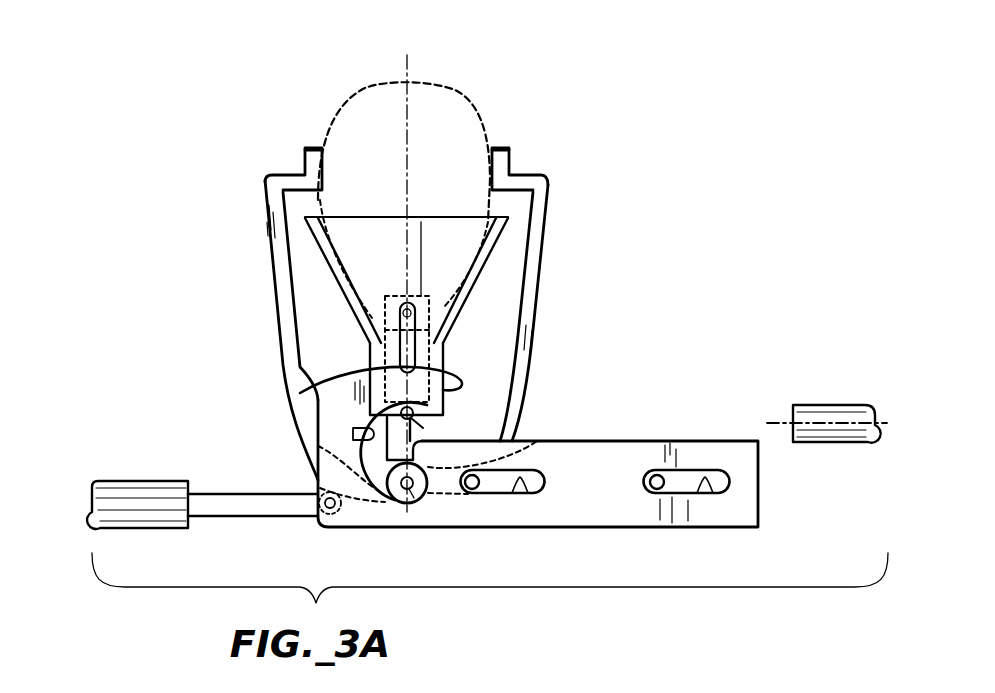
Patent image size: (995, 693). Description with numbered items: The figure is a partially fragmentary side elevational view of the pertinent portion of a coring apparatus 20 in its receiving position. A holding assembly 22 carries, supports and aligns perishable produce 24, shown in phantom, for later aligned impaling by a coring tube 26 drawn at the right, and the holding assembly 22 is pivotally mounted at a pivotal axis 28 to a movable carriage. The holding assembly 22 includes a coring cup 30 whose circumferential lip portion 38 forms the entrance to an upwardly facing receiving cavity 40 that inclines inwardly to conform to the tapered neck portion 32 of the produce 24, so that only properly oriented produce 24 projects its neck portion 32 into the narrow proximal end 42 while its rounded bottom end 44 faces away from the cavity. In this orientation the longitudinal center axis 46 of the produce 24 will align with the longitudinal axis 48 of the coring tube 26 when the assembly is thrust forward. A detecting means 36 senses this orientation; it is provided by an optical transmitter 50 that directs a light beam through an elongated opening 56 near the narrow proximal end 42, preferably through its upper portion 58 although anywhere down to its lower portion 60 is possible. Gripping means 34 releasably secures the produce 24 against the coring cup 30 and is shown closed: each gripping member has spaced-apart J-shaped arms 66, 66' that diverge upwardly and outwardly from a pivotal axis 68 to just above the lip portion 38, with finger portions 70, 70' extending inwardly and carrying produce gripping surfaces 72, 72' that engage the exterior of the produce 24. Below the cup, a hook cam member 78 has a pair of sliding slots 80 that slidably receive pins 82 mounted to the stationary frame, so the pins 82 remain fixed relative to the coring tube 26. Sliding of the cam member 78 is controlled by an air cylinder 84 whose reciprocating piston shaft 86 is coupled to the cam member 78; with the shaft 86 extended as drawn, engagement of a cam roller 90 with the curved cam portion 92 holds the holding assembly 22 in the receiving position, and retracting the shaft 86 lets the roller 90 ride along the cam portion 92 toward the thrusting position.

The coring apparatus 20 is at (167, 107).
The holding assembly 22 is at (341, 355).
The perishable produce 24 is at (477, 101).
The coring tube 26 is at (827, 444).
The pivotal axis 28 is at (430, 427).
The coring cup 30 is at (338, 307).
The tapered neck portion 32 is at (443, 327).
The gripping means 34 is at (576, 373).
The detecting means 36 is at (397, 290).
The circumferential lip portion 38 is at (516, 217).
The receiving cavity 40 is at (471, 218).
The narrow proximal end 42 is at (392, 323).
The rounded bottom end 44 is at (358, 93).
The longitudinal center axis 46 is at (409, 77).
The longitudinal axis of coring tube 48 is at (878, 426).
The optical transmitter 50 is at (443, 312).
The elongated opening 56 is at (444, 364).
The upper portion 58 is at (421, 222).
The lower portion 60 is at (300, 393).
The arm 66 is at (253, 329).
The arm 66' is at (560, 313).
The pivotal axis 68 is at (420, 501).
The finger portion 70 is at (278, 163).
The finger portion 70' is at (545, 164).
The produce gripping surface 72 is at (302, 138).
The produce gripping surface 72' is at (513, 138).
The hook cam member 78 is at (764, 506).
The sliding slots 80 is at (520, 484).
The pins 82 is at (472, 494).
The air cylinder 84 is at (143, 538).
The reciprocating piston shaft 86 is at (276, 521).
The cam roller 90 is at (392, 503).
The curved cam portion 92 is at (352, 436).